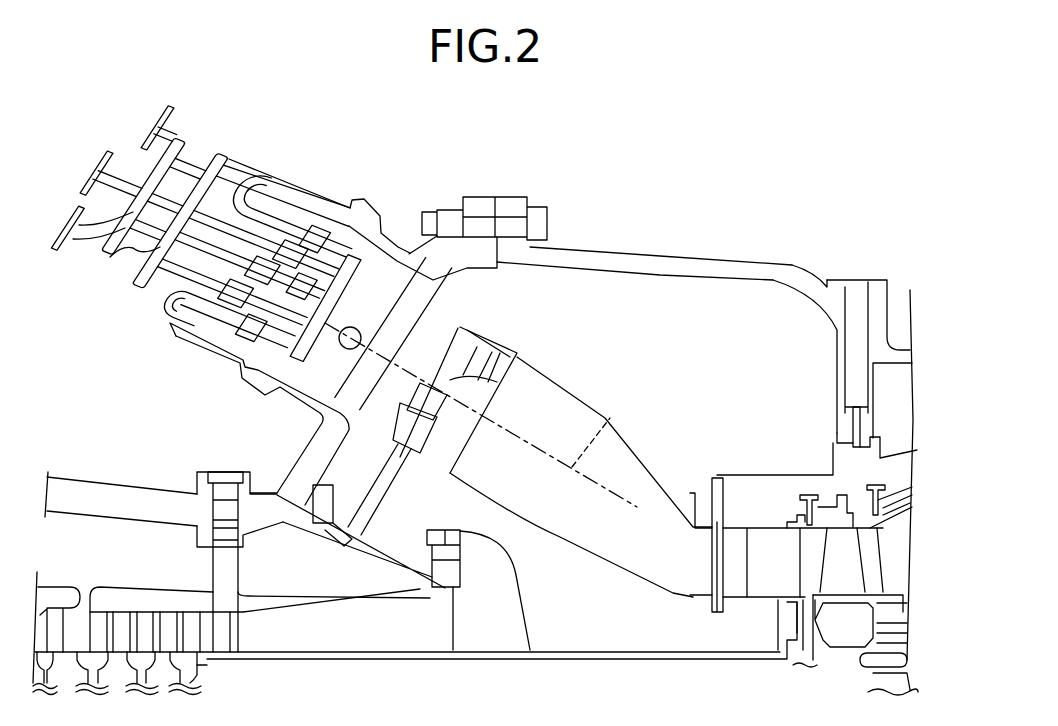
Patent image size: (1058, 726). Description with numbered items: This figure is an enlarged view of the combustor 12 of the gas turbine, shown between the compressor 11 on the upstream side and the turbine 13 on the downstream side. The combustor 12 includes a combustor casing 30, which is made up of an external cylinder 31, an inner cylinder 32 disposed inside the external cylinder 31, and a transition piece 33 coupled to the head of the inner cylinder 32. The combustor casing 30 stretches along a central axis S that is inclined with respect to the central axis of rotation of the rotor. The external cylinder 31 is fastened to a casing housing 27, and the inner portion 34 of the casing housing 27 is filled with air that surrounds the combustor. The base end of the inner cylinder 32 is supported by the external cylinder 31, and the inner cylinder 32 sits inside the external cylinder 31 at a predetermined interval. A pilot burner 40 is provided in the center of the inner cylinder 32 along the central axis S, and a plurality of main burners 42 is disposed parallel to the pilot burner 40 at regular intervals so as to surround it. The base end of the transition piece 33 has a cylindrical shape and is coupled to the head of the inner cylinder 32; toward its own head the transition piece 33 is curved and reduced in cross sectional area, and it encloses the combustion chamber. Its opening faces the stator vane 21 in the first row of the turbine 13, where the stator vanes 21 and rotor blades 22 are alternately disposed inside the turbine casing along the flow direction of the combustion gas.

The compressor 11 is at (88, 478).
The combustor 12 is at (210, 136).
The turbine 13 is at (878, 272).
The stator vane 21 is at (771, 543).
The rotor blade 22 is at (847, 560).
The casing housing 27 is at (641, 257).
The combustor casing 30 is at (562, 342).
The external cylinder 31 is at (331, 198).
The inner cylinder 32 is at (390, 268).
The transition piece 33 is at (604, 562).
The inner portion 34 is at (769, 300).
The pilot burner 40 is at (230, 262).
The main burner 42 is at (276, 200).
The central axis S is at (612, 420).